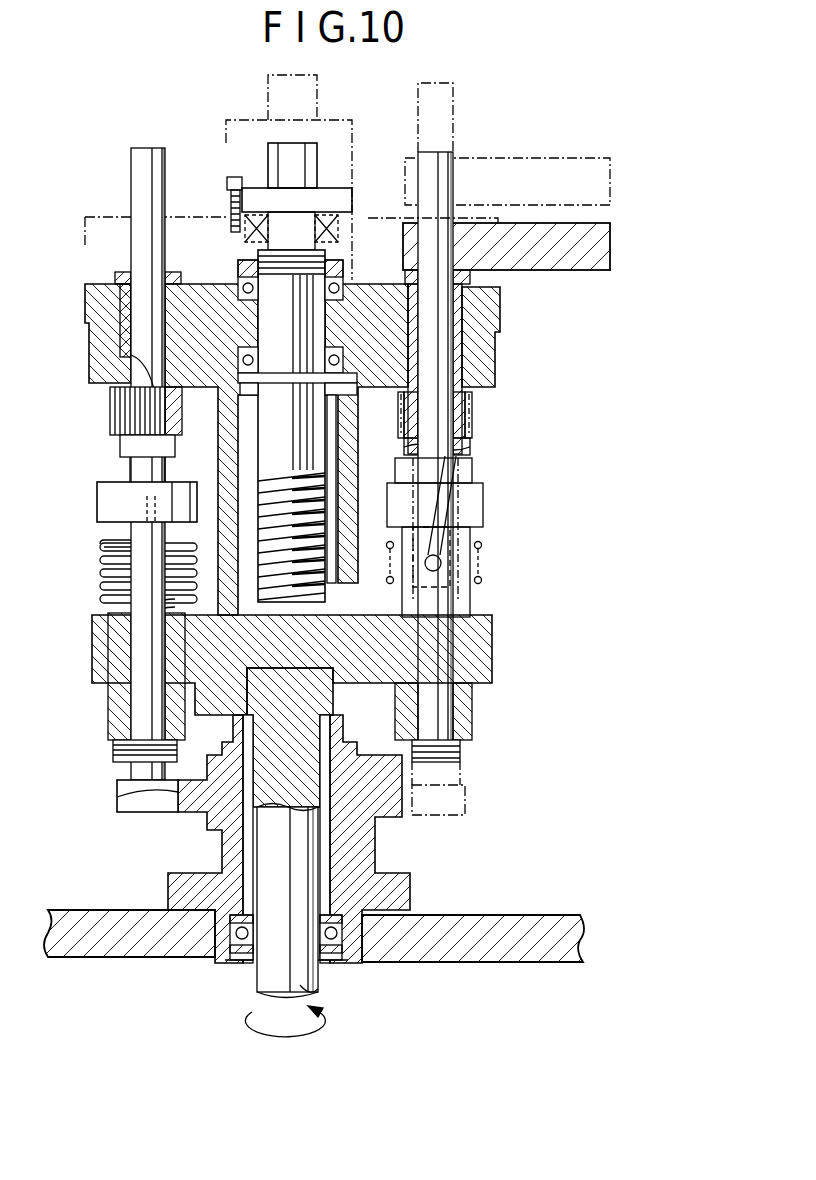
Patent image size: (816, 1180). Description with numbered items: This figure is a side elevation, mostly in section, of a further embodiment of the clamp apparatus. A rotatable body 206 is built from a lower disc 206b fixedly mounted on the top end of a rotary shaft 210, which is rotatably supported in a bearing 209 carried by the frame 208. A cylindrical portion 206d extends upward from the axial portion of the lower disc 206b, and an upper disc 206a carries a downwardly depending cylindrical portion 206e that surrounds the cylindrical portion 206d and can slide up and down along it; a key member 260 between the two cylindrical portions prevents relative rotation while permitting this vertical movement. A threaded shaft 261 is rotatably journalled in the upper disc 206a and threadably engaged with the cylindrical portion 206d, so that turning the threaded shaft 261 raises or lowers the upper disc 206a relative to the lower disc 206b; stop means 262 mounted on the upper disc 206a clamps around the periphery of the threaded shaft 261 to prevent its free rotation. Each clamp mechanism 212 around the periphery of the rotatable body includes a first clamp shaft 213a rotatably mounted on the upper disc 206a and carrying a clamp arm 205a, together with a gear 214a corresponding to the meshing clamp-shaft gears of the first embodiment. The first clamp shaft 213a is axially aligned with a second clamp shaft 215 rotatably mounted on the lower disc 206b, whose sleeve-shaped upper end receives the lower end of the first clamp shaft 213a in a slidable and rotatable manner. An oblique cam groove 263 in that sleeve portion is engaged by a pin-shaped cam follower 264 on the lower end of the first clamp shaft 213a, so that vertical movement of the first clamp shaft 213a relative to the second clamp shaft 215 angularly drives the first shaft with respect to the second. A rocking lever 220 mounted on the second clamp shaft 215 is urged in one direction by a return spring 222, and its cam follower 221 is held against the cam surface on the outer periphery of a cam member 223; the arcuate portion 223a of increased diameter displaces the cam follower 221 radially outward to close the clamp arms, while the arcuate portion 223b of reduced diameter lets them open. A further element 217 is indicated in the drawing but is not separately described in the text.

The rotatable body 206 is at (79, 280).
The upper disc 206a is at (482, 350).
The lower disc 206b is at (483, 653).
The cylindrical portion 206d is at (245, 465).
The cylindrical portion 206e is at (215, 526).
The stop means 262 is at (220, 195).
The threaded shaft 261 is at (288, 290).
The first clamp shaft 213a is at (445, 178).
The clamp arm 205a is at (612, 238).
The clamp mechanism 212 is at (581, 276).
The gear 214a is at (473, 408).
The key member 260 is at (373, 482).
The cam groove 263 is at (440, 503).
The cam follower 264 is at (441, 563).
The return spring 222 is at (100, 578).
The second clamp shaft 215 is at (468, 598).
The rocking lever 220 is at (470, 720).
The cam follower 221 is at (470, 798).
The drive assembly 217 is at (440, 822).
The arcuate portion of increased diameter 223a is at (402, 797).
The cam member 223 is at (393, 814).
The arcuate portion of reduced diameter 223b is at (140, 793).
The rotary shaft 210 is at (268, 843).
The bearing 209 is at (340, 967).
The frame 208 is at (540, 962).